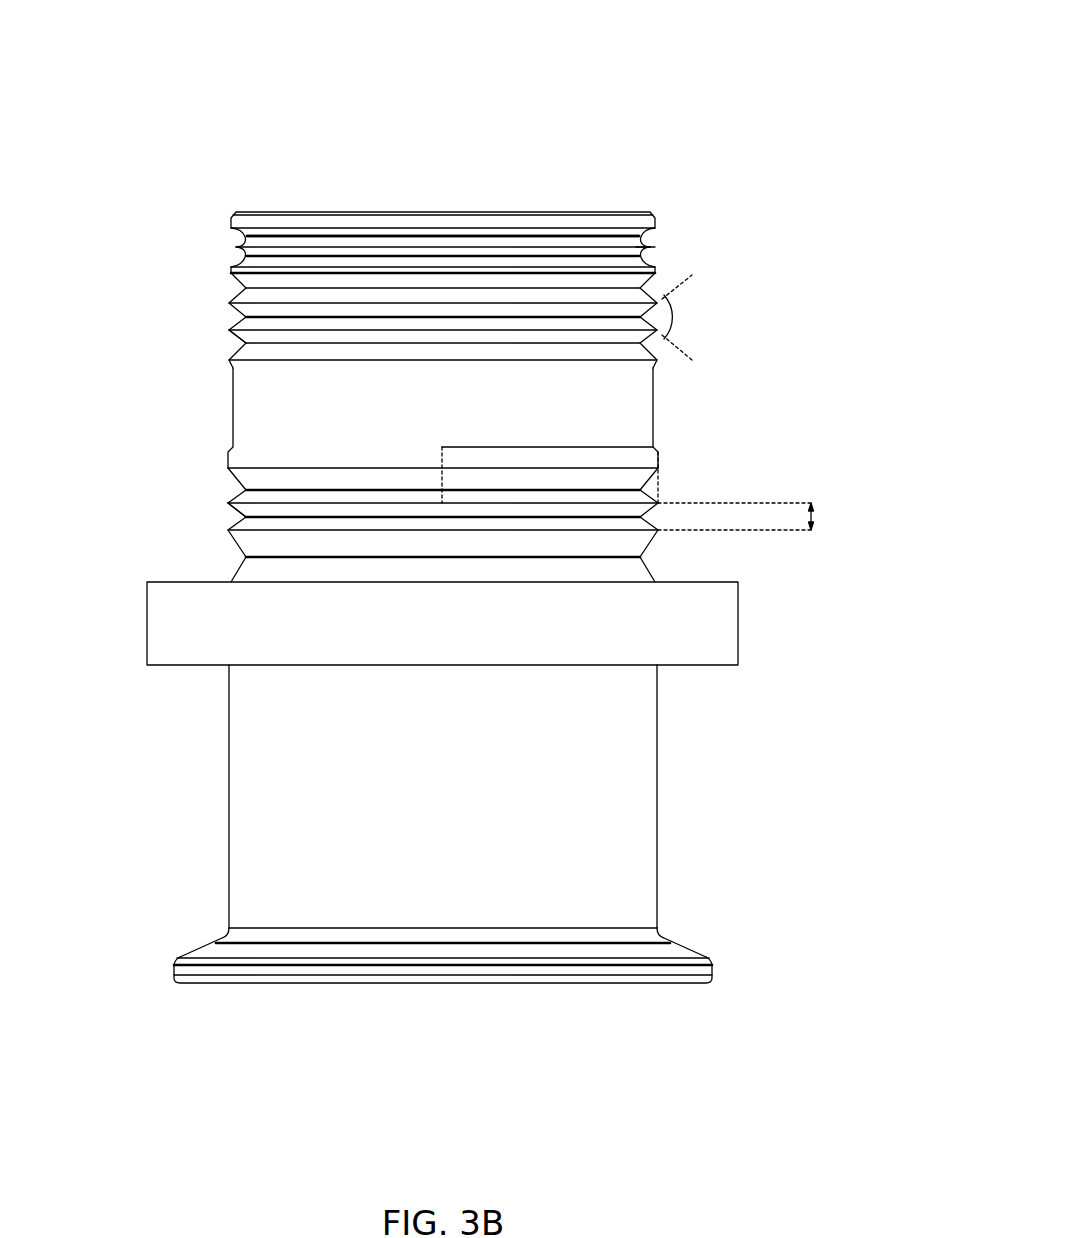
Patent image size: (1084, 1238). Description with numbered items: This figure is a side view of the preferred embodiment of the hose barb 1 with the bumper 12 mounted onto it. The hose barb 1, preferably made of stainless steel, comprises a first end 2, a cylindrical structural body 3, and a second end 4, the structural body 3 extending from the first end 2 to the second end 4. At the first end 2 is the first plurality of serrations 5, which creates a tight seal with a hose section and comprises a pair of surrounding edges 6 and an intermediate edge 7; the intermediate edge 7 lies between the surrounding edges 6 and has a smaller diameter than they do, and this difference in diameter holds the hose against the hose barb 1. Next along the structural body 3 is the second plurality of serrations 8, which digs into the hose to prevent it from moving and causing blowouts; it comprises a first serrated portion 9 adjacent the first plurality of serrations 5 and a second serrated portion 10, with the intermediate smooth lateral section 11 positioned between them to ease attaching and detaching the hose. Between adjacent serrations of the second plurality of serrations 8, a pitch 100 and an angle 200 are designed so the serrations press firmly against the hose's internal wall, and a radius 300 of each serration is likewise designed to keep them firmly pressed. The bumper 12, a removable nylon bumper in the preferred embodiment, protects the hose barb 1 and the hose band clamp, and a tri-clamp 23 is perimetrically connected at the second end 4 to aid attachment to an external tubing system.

The hose barb 1 is at (500, 549).
The first end 2 is at (406, 212).
The structural body 3 is at (250, 763).
The second end 4 is at (285, 983).
The first plurality of serrations 5 is at (533, 237).
The pair of surrounding edges 6 is at (227, 228).
The intermediate edge 7 is at (658, 247).
The second plurality of serrations 8 is at (230, 332).
The first serrated portion 9 is at (190, 312).
The second serrated portion 10 is at (180, 528).
The intermediate smooth lateral section 11 is at (340, 426).
The bumper 12 is at (713, 617).
The tri-clamp 23 is at (695, 928).
The pitch 100 is at (811, 516).
The angle 200 is at (679, 322).
The radius 300 is at (543, 446).